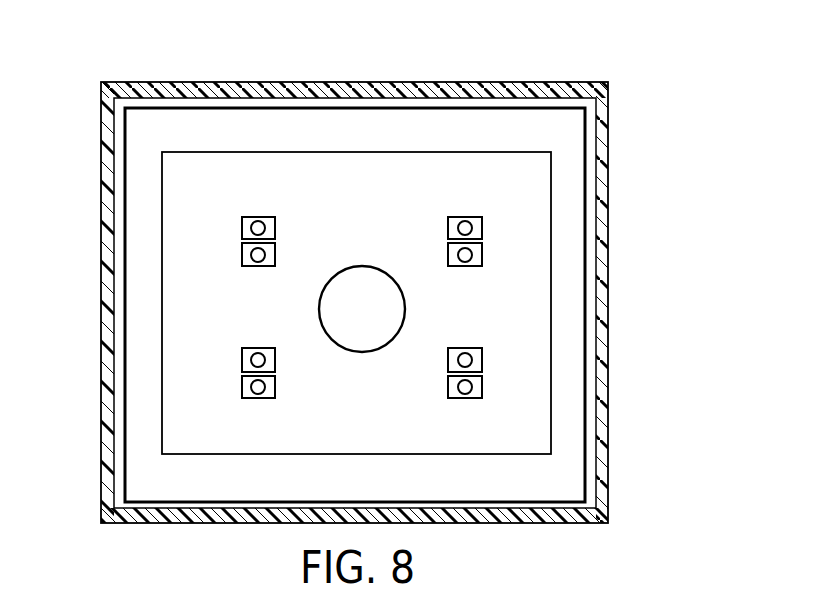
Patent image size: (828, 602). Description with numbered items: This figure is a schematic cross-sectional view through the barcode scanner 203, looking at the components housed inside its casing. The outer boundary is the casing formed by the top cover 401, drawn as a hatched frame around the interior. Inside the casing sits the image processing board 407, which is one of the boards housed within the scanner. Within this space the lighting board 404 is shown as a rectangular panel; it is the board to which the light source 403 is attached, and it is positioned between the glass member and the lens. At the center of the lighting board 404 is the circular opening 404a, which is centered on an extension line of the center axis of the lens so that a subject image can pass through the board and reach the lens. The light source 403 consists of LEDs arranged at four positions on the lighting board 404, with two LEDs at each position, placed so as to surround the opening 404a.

The barcode scanner 203 is at (553, 60).
The top cover 401 is at (610, 105).
The light source 403 is at (270, 207).
The lighting board 404 is at (428, 150).
The circular opening 404a is at (406, 252).
The image processing board 407 is at (578, 224).